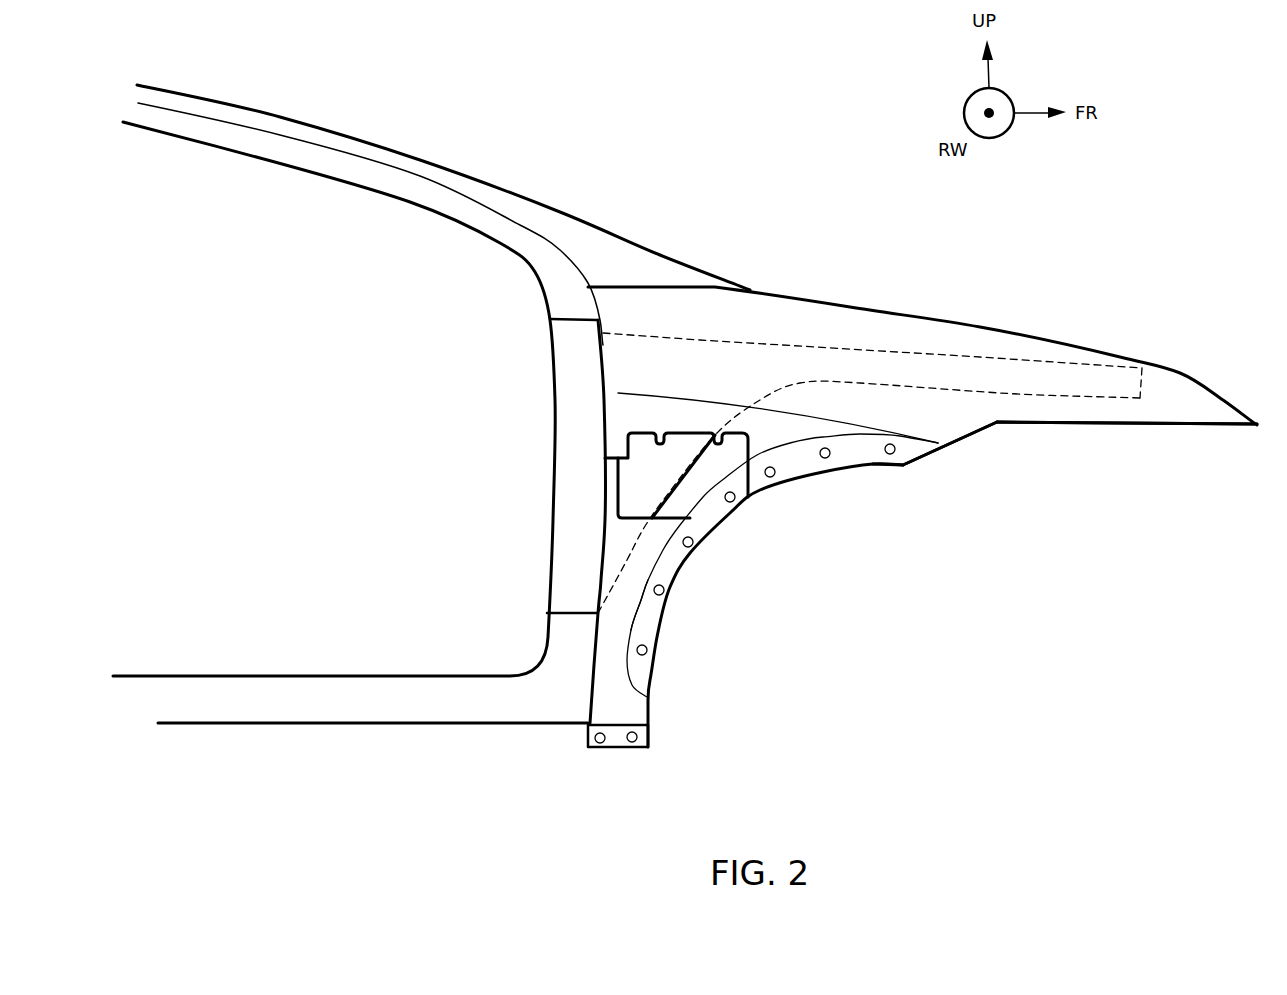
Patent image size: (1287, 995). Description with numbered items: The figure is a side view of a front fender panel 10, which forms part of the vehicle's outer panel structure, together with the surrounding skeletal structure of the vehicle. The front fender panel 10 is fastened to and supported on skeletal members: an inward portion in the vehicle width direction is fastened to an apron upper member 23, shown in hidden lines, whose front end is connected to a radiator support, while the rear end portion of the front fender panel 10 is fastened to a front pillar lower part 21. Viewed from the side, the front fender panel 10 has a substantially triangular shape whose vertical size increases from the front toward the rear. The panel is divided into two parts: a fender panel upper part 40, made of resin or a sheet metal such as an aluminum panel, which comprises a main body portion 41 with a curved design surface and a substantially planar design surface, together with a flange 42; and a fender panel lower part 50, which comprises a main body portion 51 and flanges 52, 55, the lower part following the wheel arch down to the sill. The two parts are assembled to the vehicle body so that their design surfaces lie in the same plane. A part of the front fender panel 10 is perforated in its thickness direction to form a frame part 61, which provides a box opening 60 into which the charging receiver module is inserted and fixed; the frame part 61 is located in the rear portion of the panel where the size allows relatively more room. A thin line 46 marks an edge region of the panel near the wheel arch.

The front fender panel 10 is at (907, 268).
The front pillar lower part 21 is at (570, 347).
The apron upper member 23 is at (980, 357).
The fender panel upper part 40 is at (1187, 357).
The main body portion 41 is at (1050, 408).
The flange 42 is at (873, 452).
The fender flange line 46 is at (757, 453).
The fender panel lower part 50 is at (670, 718).
The main body portion 51 is at (607, 703).
The flange 52 is at (648, 620).
The flange 55 is at (617, 742).
The box opening 60 is at (633, 503).
The frame part 61 is at (687, 498).